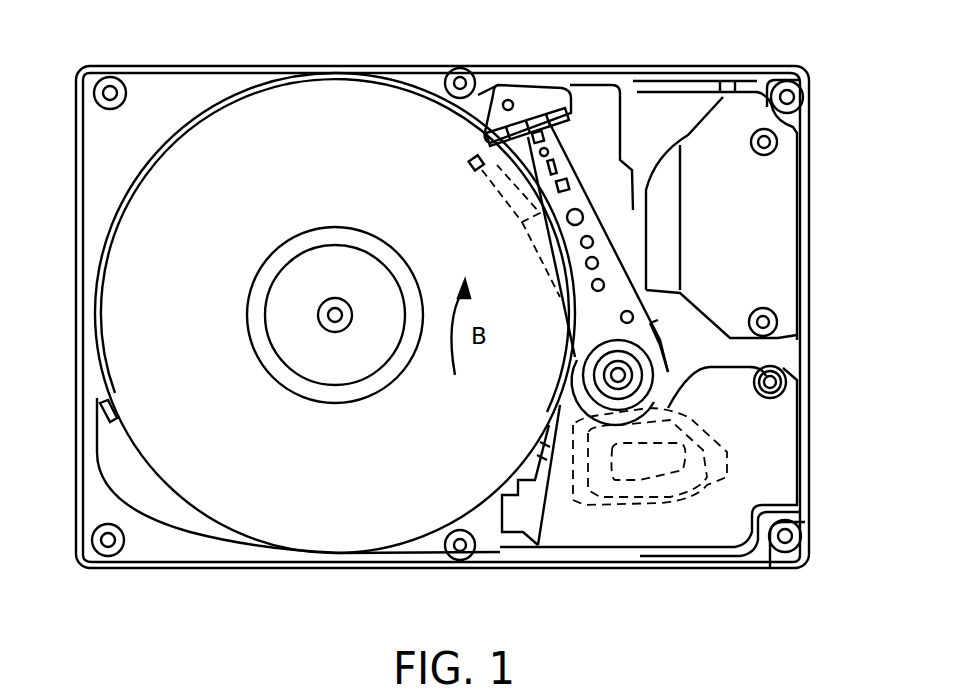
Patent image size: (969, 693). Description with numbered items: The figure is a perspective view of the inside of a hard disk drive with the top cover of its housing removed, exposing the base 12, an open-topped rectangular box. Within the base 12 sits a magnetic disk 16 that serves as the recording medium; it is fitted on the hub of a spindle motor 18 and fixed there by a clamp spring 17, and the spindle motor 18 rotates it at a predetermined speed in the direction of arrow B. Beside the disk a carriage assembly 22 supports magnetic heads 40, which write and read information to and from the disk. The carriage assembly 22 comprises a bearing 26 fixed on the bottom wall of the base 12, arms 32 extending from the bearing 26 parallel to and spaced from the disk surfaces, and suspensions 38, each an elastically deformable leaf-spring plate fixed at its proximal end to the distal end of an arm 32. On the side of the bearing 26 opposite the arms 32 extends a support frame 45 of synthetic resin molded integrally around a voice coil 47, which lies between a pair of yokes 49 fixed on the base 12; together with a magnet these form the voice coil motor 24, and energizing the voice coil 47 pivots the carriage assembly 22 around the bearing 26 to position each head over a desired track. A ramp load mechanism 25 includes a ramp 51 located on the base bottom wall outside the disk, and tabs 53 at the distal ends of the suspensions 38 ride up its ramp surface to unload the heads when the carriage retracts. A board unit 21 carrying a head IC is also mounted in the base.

The base 12 is at (162, 78).
The magnetic disk 16 is at (325, 80).
The clamp spring 17 is at (330, 375).
The spindle motor 18 is at (230, 330).
The board unit 21 is at (722, 122).
The carriage assembly 22 is at (604, 214).
The voice coil motor 24 is at (548, 465).
The ramp load mechanism 25 is at (510, 78).
The bearing 26 is at (580, 378).
The arms 32 is at (618, 300).
The suspension 38 is at (540, 175).
The magnetic heads 40 is at (472, 178).
The support frame 45 is at (720, 447).
The voice coil 47 is at (630, 493).
The yokes 49 is at (782, 440).
The ramp 51 is at (545, 108).
The tabs 53 is at (470, 158).